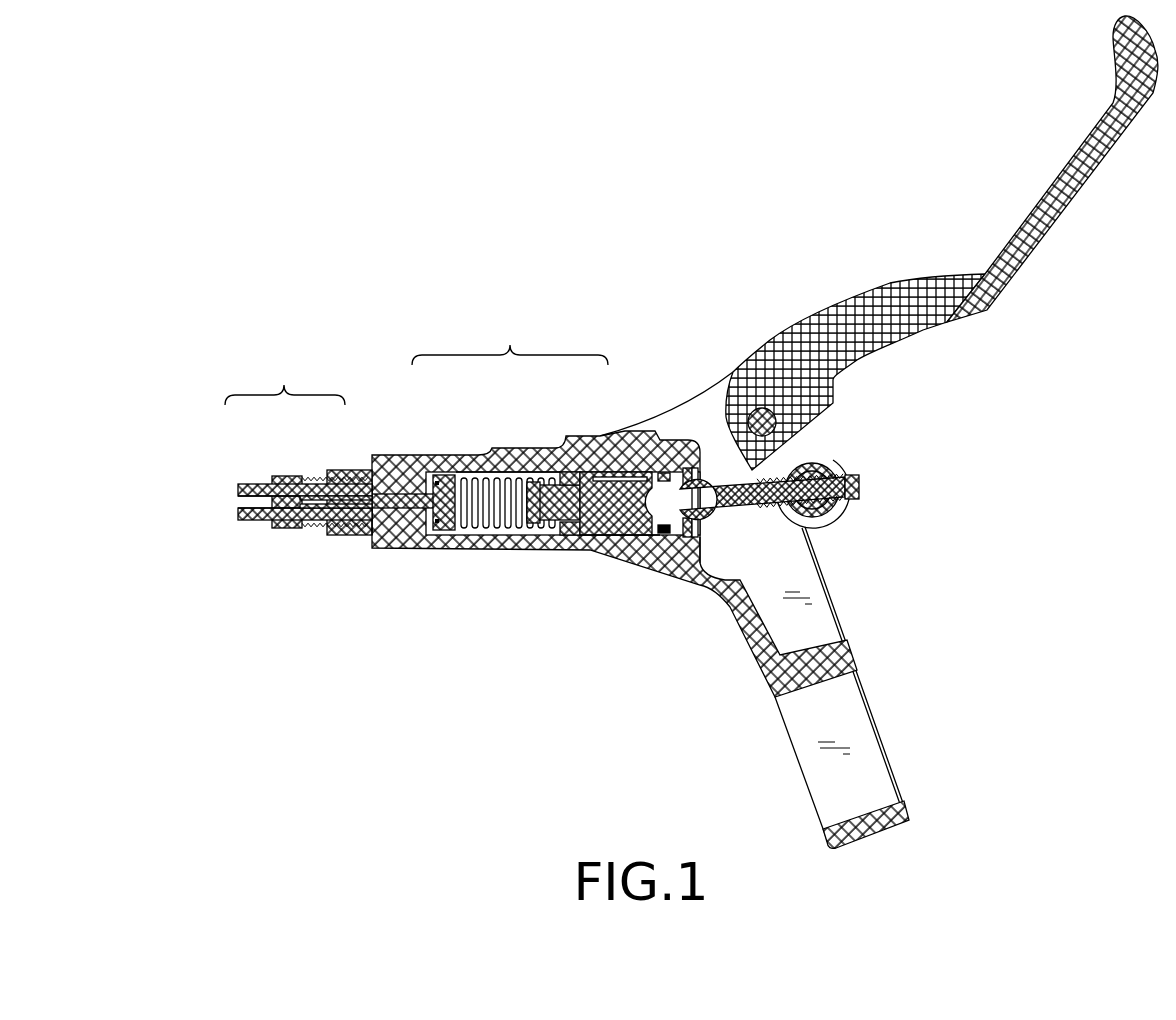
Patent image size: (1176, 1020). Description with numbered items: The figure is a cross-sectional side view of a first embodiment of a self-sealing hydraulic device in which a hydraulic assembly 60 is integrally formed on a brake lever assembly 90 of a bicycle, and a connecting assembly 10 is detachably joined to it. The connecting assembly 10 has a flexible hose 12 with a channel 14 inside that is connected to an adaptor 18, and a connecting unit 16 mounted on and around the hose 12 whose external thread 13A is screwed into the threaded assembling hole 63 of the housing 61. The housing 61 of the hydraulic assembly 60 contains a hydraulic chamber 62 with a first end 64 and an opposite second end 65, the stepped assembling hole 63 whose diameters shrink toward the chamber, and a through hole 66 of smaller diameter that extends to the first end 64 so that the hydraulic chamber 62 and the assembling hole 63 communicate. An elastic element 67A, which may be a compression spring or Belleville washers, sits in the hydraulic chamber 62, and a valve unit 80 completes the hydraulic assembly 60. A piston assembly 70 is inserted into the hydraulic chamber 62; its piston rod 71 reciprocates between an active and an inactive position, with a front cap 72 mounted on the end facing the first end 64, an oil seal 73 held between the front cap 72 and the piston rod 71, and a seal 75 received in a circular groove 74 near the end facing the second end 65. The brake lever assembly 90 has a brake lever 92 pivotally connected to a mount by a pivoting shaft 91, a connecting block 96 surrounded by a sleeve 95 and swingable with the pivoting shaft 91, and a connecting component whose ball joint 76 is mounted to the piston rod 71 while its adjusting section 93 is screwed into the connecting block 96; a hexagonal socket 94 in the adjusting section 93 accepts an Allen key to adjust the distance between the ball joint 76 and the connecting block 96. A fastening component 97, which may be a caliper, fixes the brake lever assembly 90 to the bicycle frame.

The connecting assembly 10 is at (277, 469).
The hose 12 is at (250, 486).
The external thread 13A is at (322, 528).
The channel 14 is at (250, 508).
The connecting unit 16 is at (290, 477).
The adaptor 18 is at (370, 470).
The hydraulic assembly 60 is at (535, 468).
The housing 61 is at (522, 450).
The hydraulic chamber 62 is at (505, 530).
The assembling hole 63 is at (372, 522).
The first end 64 is at (431, 534).
The second end 65 is at (705, 548).
The through hole 66 is at (404, 514).
The elastic element 67A is at (495, 477).
The piston assembly 70 is at (612, 474).
The piston rod 71 is at (608, 538).
The front cap 72 is at (548, 524).
The oil seal 73 is at (575, 530).
The circular groove 74 is at (662, 532).
The seal 75 is at (662, 476).
The ball joint 76 is at (688, 480).
The valve unit 80 is at (440, 477).
The brake lever assembly 90 is at (838, 657).
The pivoting shaft 91 is at (758, 428).
The brake lever 92 is at (1027, 210).
The adjusting section 93 is at (735, 508).
The hexagonal socket 94 is at (858, 486).
The sleeve 95 is at (833, 510).
The connecting block 96 is at (818, 468).
The fastening component 97 is at (897, 815).